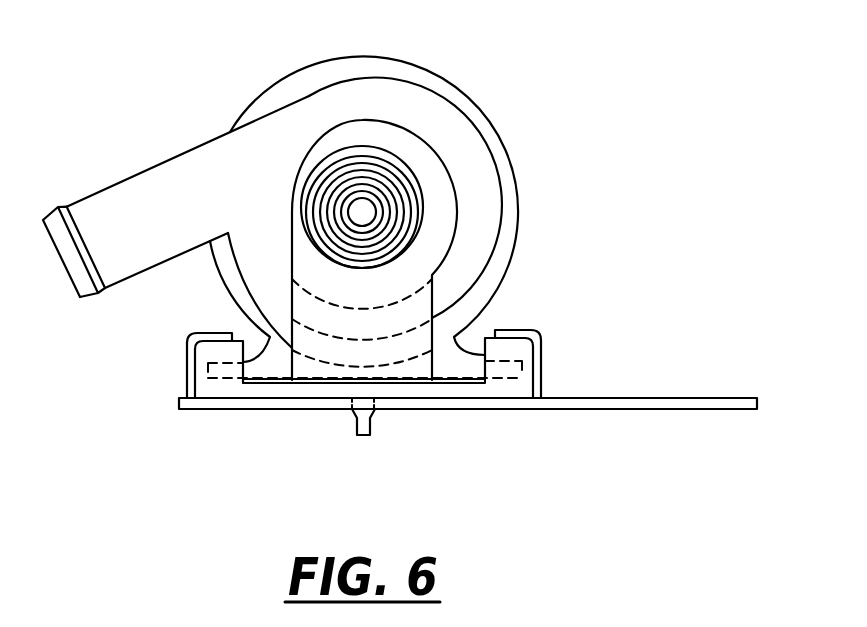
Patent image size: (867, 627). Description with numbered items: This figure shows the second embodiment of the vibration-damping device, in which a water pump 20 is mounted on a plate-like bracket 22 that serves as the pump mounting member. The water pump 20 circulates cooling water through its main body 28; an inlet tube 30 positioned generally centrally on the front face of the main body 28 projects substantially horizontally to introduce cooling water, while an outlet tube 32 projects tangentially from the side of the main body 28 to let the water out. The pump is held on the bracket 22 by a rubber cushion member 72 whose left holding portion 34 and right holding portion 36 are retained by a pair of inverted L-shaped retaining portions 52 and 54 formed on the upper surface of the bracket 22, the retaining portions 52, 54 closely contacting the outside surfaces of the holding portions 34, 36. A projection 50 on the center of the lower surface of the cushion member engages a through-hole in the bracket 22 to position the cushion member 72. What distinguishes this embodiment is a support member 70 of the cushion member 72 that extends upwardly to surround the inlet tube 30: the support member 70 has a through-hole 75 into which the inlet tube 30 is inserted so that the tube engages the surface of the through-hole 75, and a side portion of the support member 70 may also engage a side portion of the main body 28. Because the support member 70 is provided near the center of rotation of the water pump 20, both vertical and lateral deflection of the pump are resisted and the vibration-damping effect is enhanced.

The water pump 20 is at (280, 81).
The bracket 22 is at (578, 410).
The main body 28 is at (500, 141).
The inlet tube 30 is at (388, 208).
The outlet tube 32 is at (135, 176).
The left holding portion 34 is at (212, 352).
The right holding portion 36 is at (541, 348).
The projection 50 is at (372, 427).
The retaining portion 52 is at (190, 334).
The retaining portion 54 is at (536, 330).
The support member 70 is at (360, 293).
The cushion member 72 is at (468, 383).
The through-hole 75 is at (388, 170).